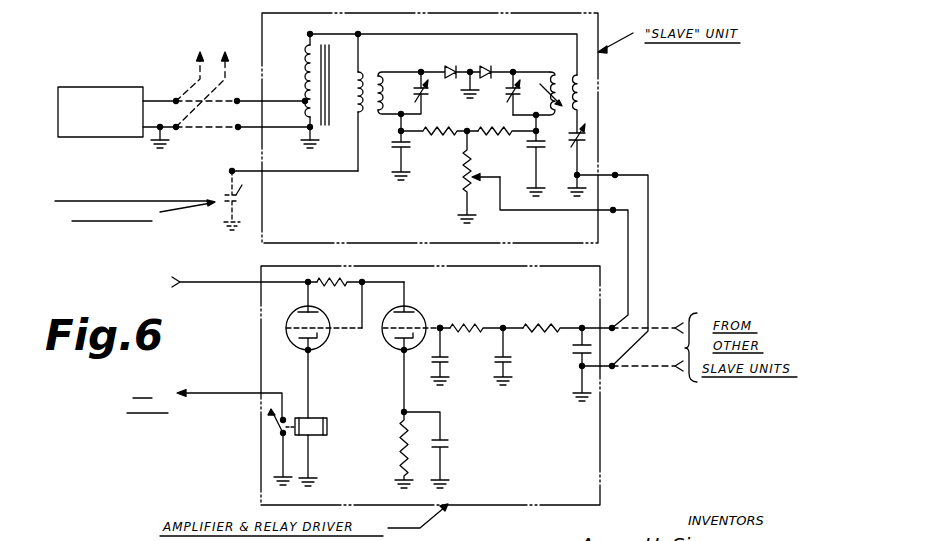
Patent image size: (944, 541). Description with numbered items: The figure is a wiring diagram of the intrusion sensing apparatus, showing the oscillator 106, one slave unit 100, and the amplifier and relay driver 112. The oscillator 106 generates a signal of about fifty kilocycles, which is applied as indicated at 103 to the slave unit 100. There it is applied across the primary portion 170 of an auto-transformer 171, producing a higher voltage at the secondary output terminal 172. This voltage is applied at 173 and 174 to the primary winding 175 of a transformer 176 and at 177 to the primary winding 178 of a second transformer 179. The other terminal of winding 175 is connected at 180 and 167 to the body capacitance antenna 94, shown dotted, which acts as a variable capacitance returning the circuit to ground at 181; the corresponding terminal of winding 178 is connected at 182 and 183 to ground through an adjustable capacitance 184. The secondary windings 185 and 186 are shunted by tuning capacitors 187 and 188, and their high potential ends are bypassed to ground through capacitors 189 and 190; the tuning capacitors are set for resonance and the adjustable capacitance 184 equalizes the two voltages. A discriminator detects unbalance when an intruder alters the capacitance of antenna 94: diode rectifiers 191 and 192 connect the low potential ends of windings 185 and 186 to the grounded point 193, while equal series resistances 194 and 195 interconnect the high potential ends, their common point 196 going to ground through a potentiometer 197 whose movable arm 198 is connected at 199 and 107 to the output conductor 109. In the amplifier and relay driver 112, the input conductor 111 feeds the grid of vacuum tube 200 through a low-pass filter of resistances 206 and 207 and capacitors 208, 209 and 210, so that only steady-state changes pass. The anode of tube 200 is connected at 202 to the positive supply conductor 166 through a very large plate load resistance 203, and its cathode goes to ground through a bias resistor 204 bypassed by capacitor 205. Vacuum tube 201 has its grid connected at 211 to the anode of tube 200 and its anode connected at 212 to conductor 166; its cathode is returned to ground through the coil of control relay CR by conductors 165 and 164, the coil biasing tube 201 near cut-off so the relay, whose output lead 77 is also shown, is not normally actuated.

The slave unit 100 is at (598, 104).
The oscillator signal connection 103 is at (244, 97).
The oscillator 106 is at (88, 87).
The connection to output conductor 107 is at (613, 212).
The output conductor 109 is at (628, 287).
The input conductor 111 is at (612, 320).
The amplifier and relay driver 112 is at (603, 437).
The relay output conductor to S2 77 is at (222, 392).
The body capacitance antenna 94 is at (242, 207).
The conductor to ground 164 is at (312, 467).
The cathode conductor 165 is at (312, 407).
The positive power supply conductor 166 is at (225, 281).
The antenna connection 167 is at (254, 158).
The primary portion 170 is at (302, 110).
The auto-transformer 171 is at (304, 89).
The secondary output terminal 172 is at (307, 34).
The connection to primary winding 173 is at (322, 34).
The connection to primary winding 174 is at (360, 66).
The primary winding 175 is at (346, 102).
The transformer 176 is at (368, 118).
The connection to second primary winding 177 is at (475, 35).
The primary winding 178 is at (581, 90).
The second transformer 179 is at (561, 71).
The connection to antenna 180 is at (323, 172).
The ground return 181 is at (225, 200).
The connection to adjustable capacitance 182 is at (580, 126).
The connection to adjustable capacitance 183 is at (581, 167).
The adjustable capacitance 184 is at (584, 136).
The secondary winding 185 is at (410, 90).
The secondary winding 186 is at (514, 98).
The tuning capacitor 187 is at (437, 94).
The tuning capacitor 188 is at (474, 96).
The bypass capacitor 189 is at (389, 148).
The bypass capacitor 190 is at (533, 152).
The diode rectifier 191 is at (452, 58).
The diode rectifier 192 is at (496, 68).
The grounded point 193 is at (488, 57).
The resistance 194 is at (424, 138).
The resistance 195 is at (506, 135).
The point of common connection 196 is at (463, 158).
The potentiometer 197 is at (462, 183).
The movable arm 198 is at (494, 188).
The connection to output conductor 199 is at (533, 212).
The vacuum tube 200 is at (428, 320).
The vacuum tube 201 is at (291, 320).
The anode connection 202 is at (406, 304).
The plate load resistance 203 is at (328, 288).
The bias resistor 204 is at (397, 440).
The bypass capacitor 205 is at (453, 439).
The filter resistance 206 is at (480, 319).
The filter resistance 207 is at (541, 320).
The filter capacitor 208 is at (452, 360).
The filter capacitor 209 is at (517, 362).
The filter capacitor 210 is at (566, 355).
The grid connection 211 is at (364, 308).
The anode connection 212 is at (303, 290).